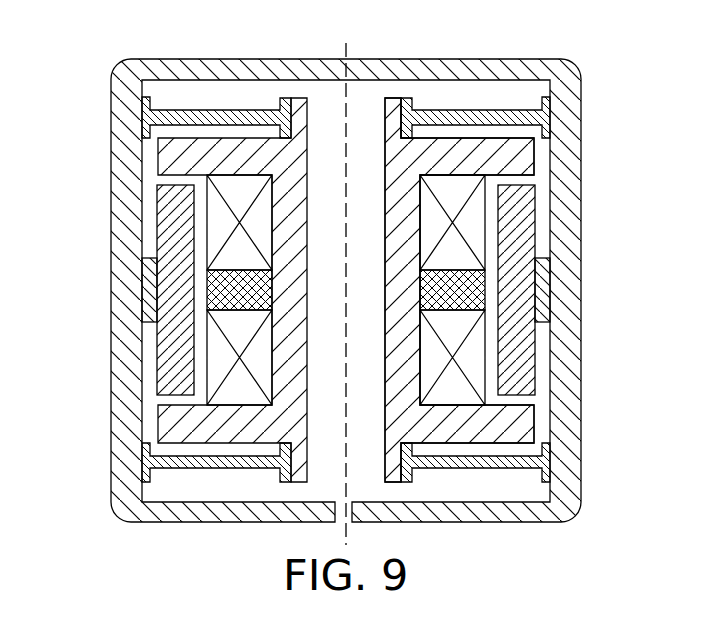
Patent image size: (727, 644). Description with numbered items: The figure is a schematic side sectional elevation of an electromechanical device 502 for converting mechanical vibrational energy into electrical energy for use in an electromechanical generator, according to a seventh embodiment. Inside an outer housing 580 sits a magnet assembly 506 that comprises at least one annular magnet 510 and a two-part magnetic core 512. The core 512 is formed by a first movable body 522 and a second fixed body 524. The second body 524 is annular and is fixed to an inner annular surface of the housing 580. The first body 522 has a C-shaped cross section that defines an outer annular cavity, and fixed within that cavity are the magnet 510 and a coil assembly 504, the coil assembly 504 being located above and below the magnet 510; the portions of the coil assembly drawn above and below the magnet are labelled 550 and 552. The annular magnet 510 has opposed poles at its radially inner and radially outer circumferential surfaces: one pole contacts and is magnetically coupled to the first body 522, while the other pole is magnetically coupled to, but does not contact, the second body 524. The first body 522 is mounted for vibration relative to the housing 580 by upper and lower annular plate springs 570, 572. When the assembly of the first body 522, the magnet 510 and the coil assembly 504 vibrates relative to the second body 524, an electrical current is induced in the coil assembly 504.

The electromechanical device 502 is at (594, 497).
The coil assembly 504 is at (349, 290).
The magnet assembly 506 is at (518, 155).
The annular magnet 510 is at (472, 290).
The two-part magnetic core 512 is at (533, 223).
The first movable body 522 is at (410, 392).
The second fixed body 524 is at (533, 187).
The upper coil portion 550 is at (218, 210).
The lower coil portion 552 is at (218, 368).
The upper annular plate spring 570 is at (481, 118).
The lower annular plate spring 572 is at (472, 470).
The outer housing 580 is at (553, 521).